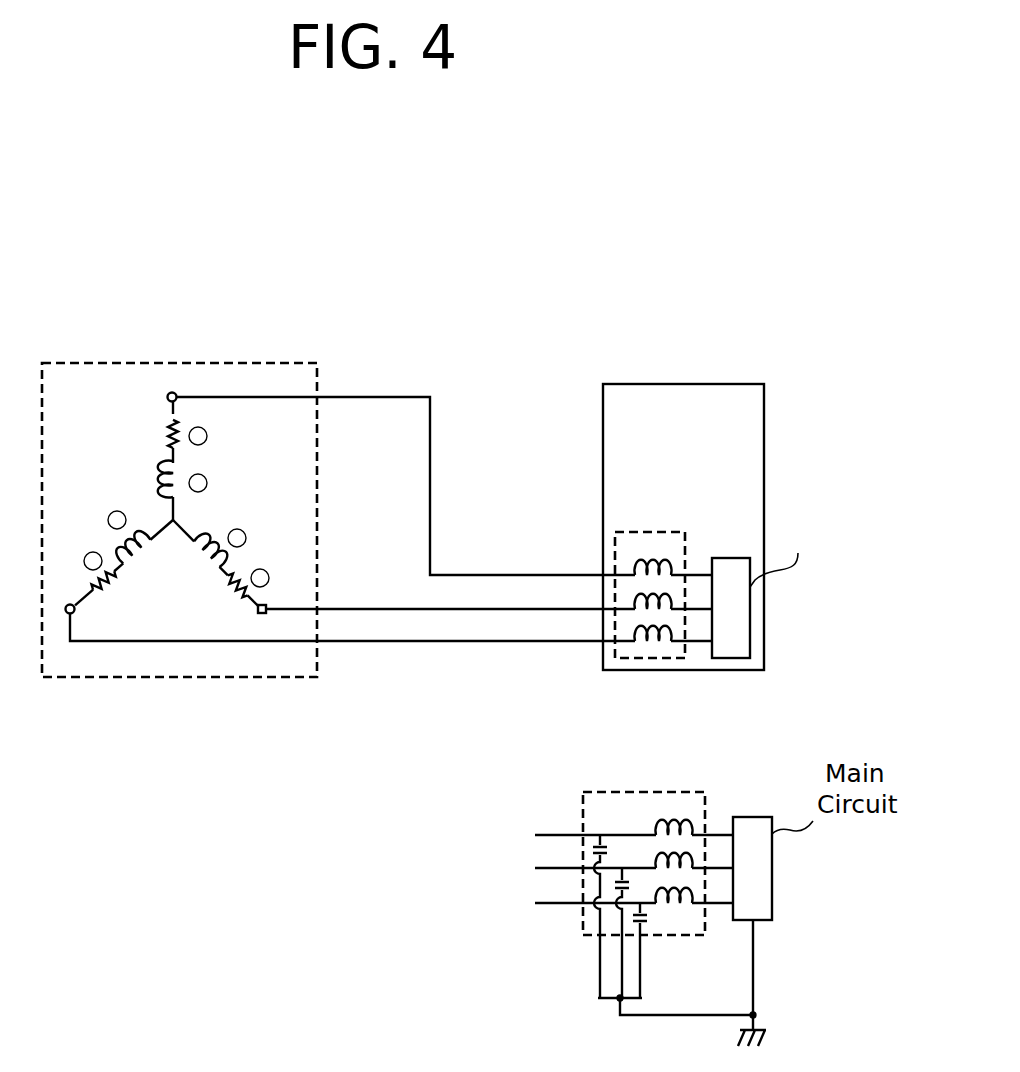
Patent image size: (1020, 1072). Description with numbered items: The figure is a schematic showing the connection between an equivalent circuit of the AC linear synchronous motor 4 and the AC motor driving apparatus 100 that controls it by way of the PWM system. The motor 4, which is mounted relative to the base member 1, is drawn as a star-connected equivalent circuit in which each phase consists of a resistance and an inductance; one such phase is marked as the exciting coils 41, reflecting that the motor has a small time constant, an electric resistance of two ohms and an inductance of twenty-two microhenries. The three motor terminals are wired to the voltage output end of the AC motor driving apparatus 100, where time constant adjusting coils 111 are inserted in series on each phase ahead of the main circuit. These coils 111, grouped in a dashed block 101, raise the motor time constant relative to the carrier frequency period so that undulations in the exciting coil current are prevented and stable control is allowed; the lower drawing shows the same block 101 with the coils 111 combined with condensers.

The base member 1 is at (417, 292).
The AC linear synchronous motor 4 is at (257, 363).
The exciting coils 41 is at (216, 422).
The AC motor driving apparatus 100 is at (725, 384).
The filter (reactor) circuit 101 is at (671, 532).
The time constant adjusting coils 111 is at (672, 561).